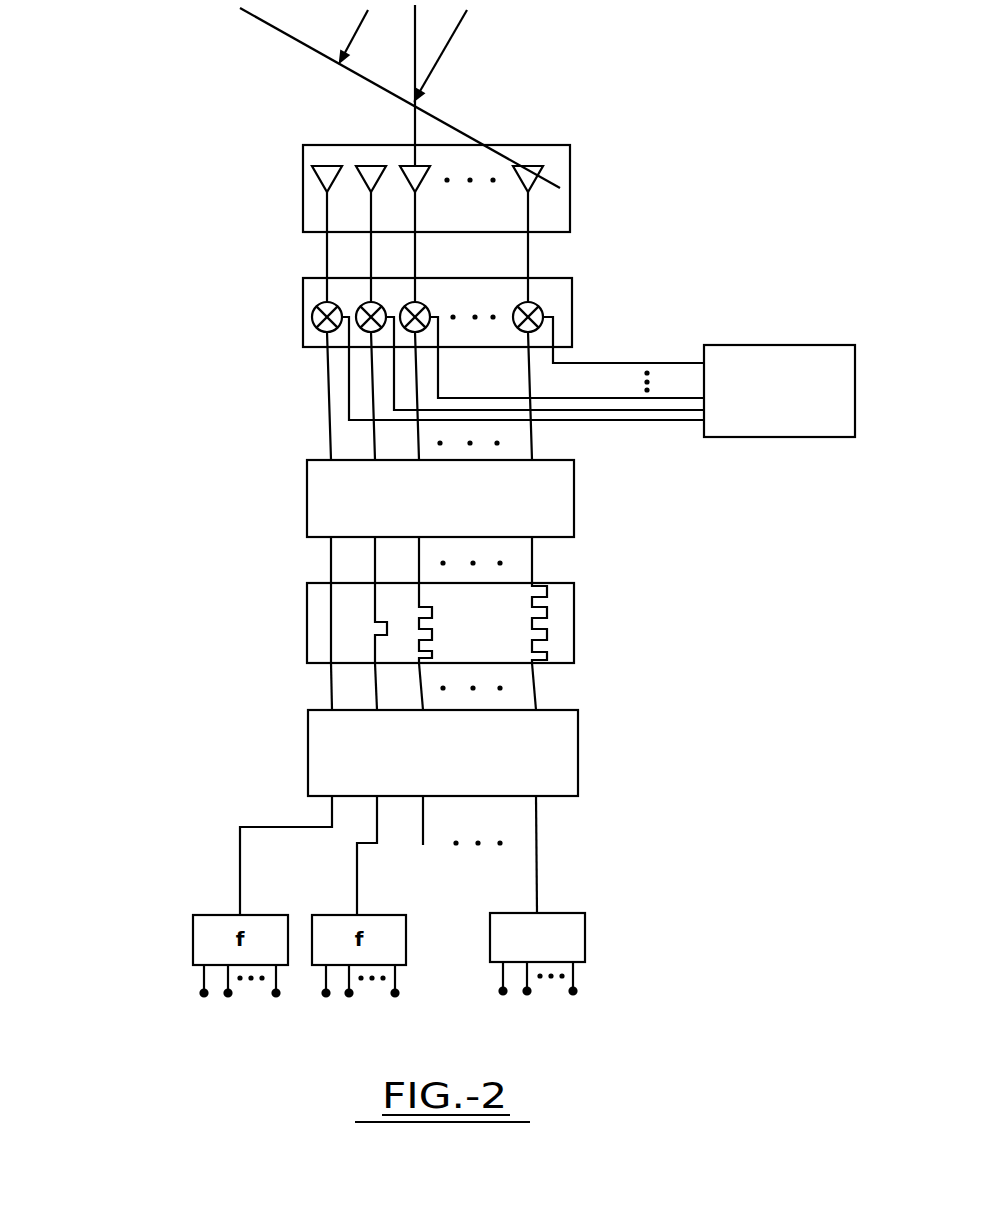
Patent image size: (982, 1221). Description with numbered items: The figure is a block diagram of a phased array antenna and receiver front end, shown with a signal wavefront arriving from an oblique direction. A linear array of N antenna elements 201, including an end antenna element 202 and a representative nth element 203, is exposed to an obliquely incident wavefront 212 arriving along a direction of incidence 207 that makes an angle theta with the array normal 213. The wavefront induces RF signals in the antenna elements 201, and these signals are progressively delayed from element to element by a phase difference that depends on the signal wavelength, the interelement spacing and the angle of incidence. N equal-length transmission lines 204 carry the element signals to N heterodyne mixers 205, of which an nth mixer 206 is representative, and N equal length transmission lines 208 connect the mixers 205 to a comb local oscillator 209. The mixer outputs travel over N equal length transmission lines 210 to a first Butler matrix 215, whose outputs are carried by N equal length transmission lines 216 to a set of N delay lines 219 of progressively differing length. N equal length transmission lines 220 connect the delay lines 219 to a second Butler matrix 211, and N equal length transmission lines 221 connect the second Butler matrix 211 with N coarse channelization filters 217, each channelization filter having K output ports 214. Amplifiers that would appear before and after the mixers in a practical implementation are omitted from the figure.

The antenna elements 201 is at (442, 166).
The end antenna element 202 is at (535, 165).
The nth antenna element 203 is at (315, 166).
The equal-length transmission lines 204 is at (530, 262).
The heterodyne mixers 205 is at (478, 295).
The nth mixer 206 is at (335, 305).
The direction of incidence 207 is at (445, 52).
The equal length transmission lines 208 is at (610, 425).
The comb local oscillator 209 is at (775, 345).
The equal length transmission lines 210 is at (325, 428).
The second Butler matrix 211 is at (578, 750).
The obliquely incident wavefront 212 is at (318, 52).
The array normal 213 is at (411, 52).
The output ports 214 is at (575, 990).
The first Butler matrix 215 is at (574, 510).
The equal length transmission lines 216 is at (533, 565).
The coarse channelization filters 217 is at (585, 930).
The delay lines 219 is at (574, 618).
The equal length transmission lines 220 is at (535, 693).
The equal length transmission lines 221 is at (537, 818).